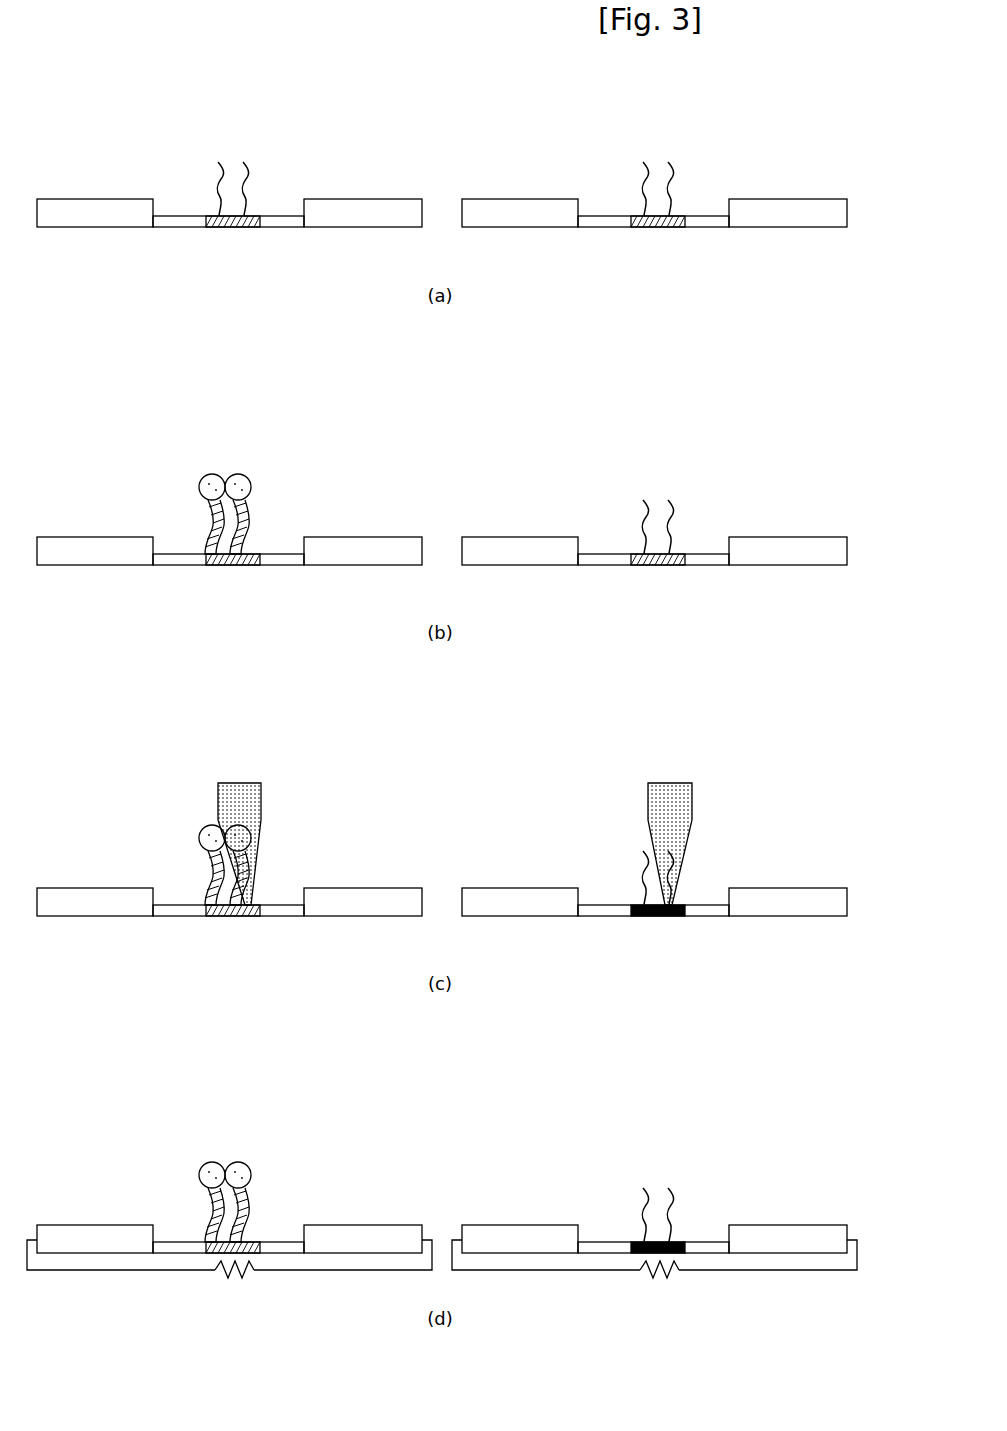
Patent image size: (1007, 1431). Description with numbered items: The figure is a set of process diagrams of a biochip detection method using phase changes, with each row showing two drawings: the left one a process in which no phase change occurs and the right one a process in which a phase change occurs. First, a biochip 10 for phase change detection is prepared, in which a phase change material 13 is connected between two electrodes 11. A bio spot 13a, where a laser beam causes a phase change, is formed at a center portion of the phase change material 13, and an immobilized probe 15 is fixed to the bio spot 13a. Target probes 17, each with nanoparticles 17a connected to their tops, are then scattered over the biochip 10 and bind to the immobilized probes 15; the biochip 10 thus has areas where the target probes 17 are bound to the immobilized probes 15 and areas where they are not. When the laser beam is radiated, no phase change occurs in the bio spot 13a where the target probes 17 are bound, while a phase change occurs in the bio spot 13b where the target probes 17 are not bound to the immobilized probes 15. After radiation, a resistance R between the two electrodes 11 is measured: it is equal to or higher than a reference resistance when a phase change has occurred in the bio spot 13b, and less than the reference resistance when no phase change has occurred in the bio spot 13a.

The biochip 10 is at (442, 662).
The electrodes 11 is at (442, 683).
The phase change material 13 is at (284, 212).
The bio spot 13a is at (234, 228).
The bio spot 13b is at (680, 920).
The immobilized probe 15 is at (258, 170).
The target probes 17 is at (240, 540).
The nanoparticles 17a is at (238, 473).
The resistance R is at (447, 1282).